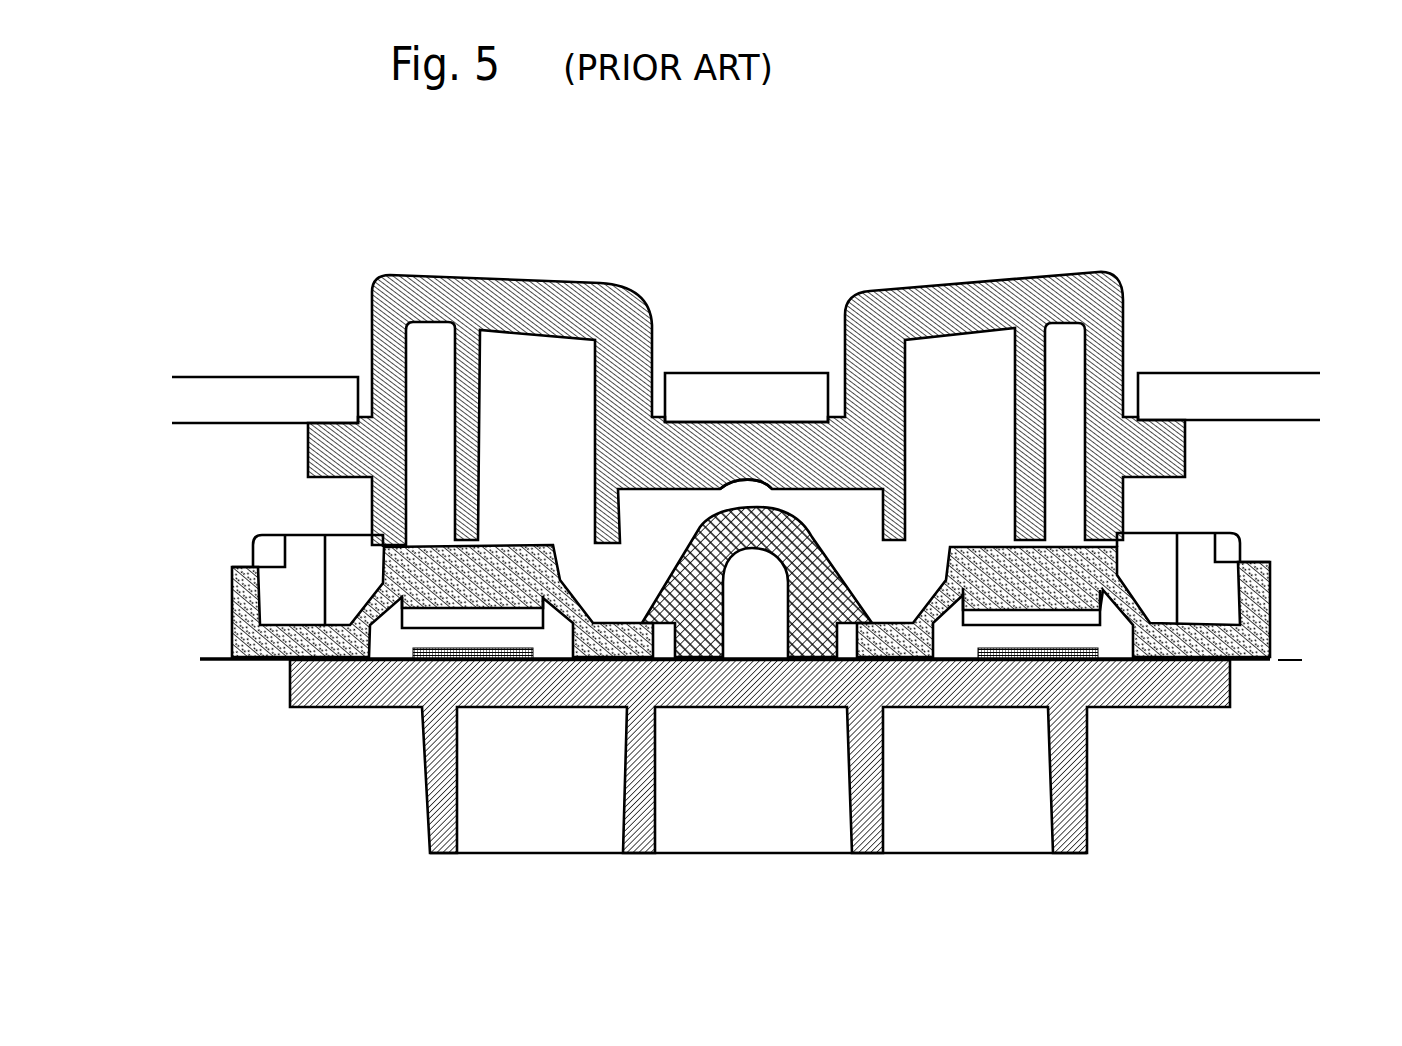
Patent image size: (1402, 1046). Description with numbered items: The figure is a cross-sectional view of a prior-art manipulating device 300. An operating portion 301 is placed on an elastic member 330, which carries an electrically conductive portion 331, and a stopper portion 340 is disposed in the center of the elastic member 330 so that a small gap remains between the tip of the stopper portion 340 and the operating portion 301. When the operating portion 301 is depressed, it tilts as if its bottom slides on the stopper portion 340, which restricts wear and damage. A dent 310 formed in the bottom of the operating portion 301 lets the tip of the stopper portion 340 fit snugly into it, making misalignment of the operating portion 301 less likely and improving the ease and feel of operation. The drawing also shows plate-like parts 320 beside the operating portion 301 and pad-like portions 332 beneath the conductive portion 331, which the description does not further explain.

The manipulating device 300 is at (1249, 196).
The operating portion 301 is at (557, 289).
The dent 310 is at (746, 497).
The circuit board plate 320 is at (207, 373).
The elastic member 330 is at (240, 613).
The electrically conductive portion 331 is at (408, 633).
The solder pad 332 is at (420, 713).
The stopper portion 340 is at (810, 647).